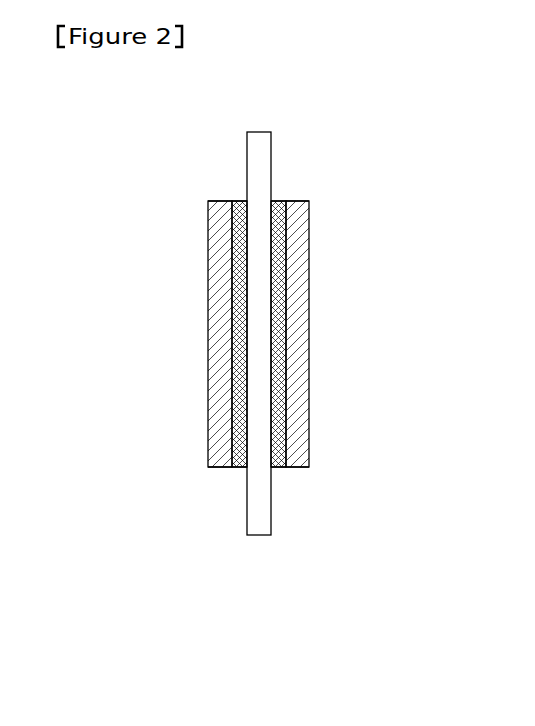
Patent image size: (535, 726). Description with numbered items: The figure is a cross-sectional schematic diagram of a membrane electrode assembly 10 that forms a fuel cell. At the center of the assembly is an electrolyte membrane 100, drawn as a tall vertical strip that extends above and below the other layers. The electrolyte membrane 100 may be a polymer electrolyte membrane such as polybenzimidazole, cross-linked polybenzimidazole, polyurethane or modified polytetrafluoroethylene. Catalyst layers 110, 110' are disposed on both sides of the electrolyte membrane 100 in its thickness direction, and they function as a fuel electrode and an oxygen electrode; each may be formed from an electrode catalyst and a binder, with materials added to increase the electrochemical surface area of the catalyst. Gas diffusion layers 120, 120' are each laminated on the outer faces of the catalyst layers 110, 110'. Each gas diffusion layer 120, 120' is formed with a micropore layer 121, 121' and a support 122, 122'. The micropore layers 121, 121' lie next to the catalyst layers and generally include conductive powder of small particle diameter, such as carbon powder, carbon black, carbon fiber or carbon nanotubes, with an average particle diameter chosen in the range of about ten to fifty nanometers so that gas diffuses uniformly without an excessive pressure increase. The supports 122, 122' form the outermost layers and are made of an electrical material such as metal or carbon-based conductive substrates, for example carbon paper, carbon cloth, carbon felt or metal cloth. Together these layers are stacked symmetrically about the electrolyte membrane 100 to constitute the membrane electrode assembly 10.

The membrane electrode assembly 10 is at (160, 127).
The electrolyte membrane 100 is at (258, 131).
The catalyst layer 110 is at (227, 490).
The catalyst layer 110' is at (290, 490).
The gas diffusion layer 120 is at (219, 298).
The gas diffusion layer 120' is at (302, 298).
The micropore layer 121 is at (232, 311).
The micropore layer 121' is at (288, 311).
The support 122 is at (207, 311).
The support 122' is at (313, 311).